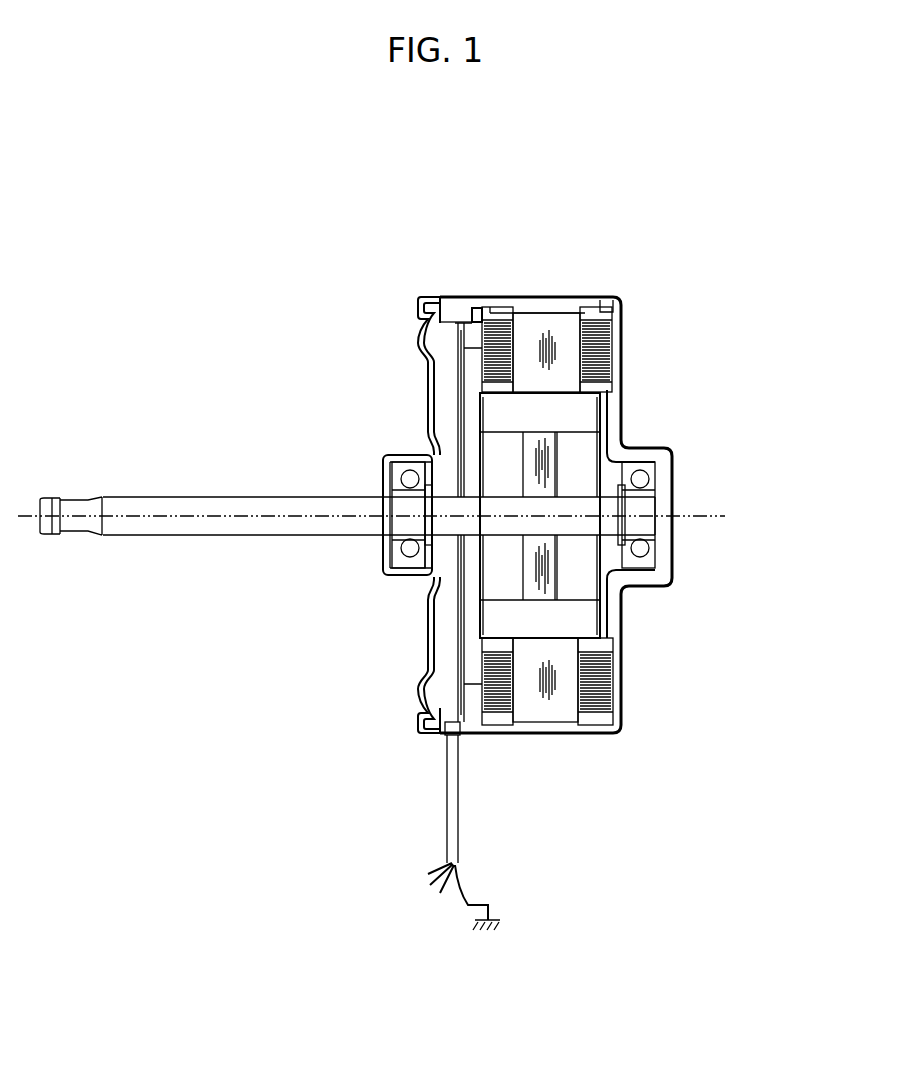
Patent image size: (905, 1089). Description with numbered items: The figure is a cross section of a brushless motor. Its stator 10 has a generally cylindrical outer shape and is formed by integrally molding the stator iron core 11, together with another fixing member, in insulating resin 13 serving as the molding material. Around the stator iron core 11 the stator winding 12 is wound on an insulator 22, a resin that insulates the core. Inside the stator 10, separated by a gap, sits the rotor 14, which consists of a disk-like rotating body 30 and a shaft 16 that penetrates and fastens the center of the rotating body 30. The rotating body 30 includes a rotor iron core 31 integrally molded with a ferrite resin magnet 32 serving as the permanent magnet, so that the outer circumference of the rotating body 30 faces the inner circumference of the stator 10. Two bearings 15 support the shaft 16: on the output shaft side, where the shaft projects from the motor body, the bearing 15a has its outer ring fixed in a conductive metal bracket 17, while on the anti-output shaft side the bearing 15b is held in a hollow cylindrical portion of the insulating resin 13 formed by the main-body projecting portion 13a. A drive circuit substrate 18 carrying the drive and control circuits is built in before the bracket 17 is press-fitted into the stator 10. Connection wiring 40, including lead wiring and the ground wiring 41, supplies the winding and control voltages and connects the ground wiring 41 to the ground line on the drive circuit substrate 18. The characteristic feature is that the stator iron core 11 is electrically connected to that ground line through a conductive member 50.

The stator 10 is at (603, 306).
The stator iron core 11 is at (552, 348).
The stator winding 12 is at (611, 349).
The insulating resin 13 is at (453, 300).
The main-body projecting portion 13a is at (669, 568).
The rotor 14 is at (432, 515).
The bearings 15 is at (436, 553).
The bearing on the output shaft side 15a is at (403, 551).
The bearing on the anti-output shaft side 15b is at (625, 548).
The shaft 16 is at (606, 509).
The metal bracket 17 is at (437, 394).
The drive circuit substrate 18 is at (462, 428).
The insulator 22 is at (516, 332).
The rotating body 30 is at (636, 515).
The rotor iron core 31 is at (545, 470).
The ferrite resin magnet 32 is at (585, 423).
The connection wiring 40 is at (454, 780).
The ground wiring 41 is at (467, 893).
The conductive member 50 is at (478, 308).